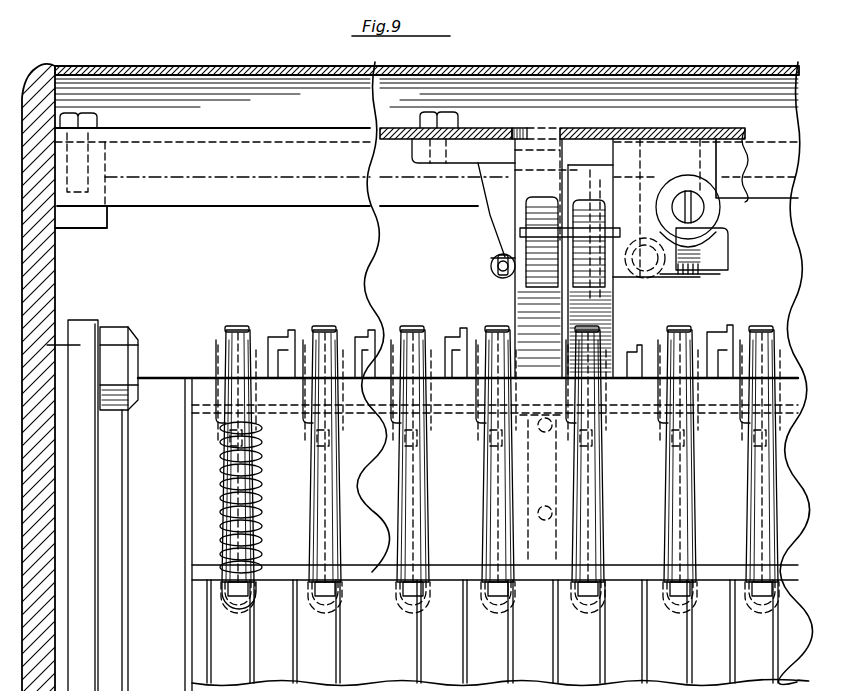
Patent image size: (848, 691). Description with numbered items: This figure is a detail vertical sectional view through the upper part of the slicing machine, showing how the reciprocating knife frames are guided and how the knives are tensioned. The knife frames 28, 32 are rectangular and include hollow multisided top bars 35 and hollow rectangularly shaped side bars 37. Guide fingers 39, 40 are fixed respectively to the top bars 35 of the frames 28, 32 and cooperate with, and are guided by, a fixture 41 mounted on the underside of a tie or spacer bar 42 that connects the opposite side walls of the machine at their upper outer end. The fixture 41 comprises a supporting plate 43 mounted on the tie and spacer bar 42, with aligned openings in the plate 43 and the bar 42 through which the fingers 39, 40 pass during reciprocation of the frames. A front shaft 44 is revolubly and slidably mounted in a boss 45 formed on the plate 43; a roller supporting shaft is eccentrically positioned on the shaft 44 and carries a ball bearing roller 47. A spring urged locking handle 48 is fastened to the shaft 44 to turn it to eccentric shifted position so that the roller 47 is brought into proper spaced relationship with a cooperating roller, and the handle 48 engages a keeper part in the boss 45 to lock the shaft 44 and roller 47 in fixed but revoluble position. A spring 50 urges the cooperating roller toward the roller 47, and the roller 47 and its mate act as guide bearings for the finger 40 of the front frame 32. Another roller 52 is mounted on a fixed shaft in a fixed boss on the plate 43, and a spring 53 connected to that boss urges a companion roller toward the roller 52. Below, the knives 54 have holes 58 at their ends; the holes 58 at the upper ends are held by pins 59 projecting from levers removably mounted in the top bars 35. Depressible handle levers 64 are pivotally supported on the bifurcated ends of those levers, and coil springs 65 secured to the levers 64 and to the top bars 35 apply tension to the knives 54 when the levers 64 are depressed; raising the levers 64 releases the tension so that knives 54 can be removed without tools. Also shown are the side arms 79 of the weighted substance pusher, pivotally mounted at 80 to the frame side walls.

The knife frame 28 is at (382, 374).
The knife frame 32 is at (786, 412).
The top bar 35 is at (203, 386).
The side bar 37 is at (128, 646).
The guide finger 39 is at (597, 150).
The guide finger 40 is at (558, 150).
The fixture 41 is at (720, 152).
The tie or spacer bar 42 is at (283, 128).
The supporting plate 43 is at (465, 140).
The front shaft 44 is at (702, 265).
The boss 45 is at (678, 272).
The ball bearing roller 47 is at (535, 213).
The locking handle 48 is at (720, 214).
The spring 50 is at (491, 260).
The roller 52 is at (600, 205).
The spring 53 is at (645, 269).
The knife 54 is at (250, 652).
The hole 58 is at (518, 506).
The pin 59 is at (520, 546).
The depressible handle lever 64 is at (250, 398).
The coil spring 65 is at (230, 600).
The side arm 79 is at (90, 570).
The pivot 80 is at (138, 352).